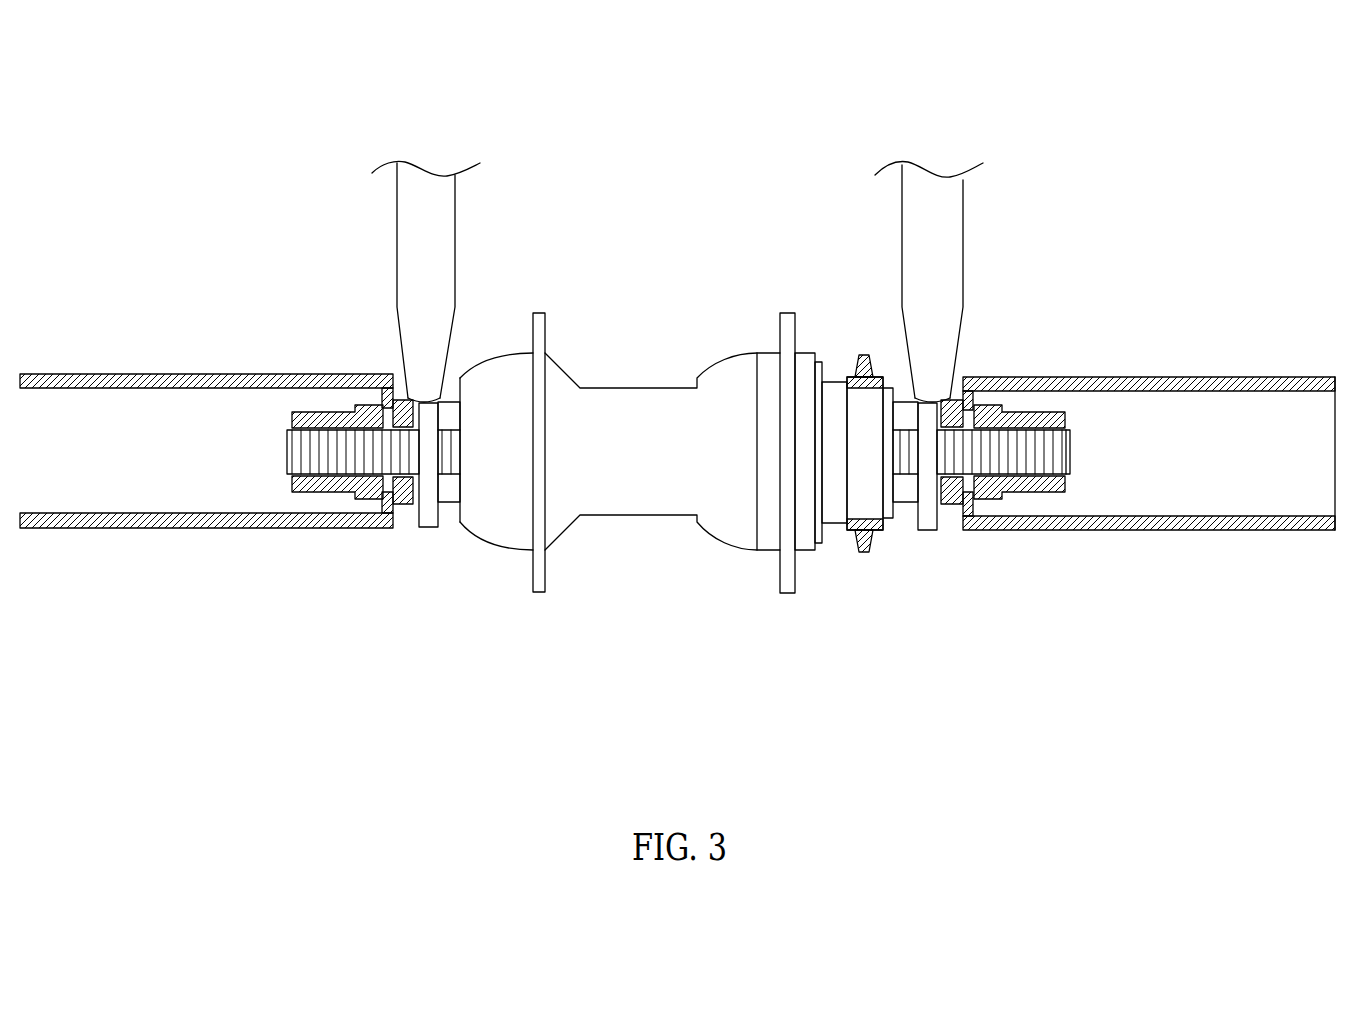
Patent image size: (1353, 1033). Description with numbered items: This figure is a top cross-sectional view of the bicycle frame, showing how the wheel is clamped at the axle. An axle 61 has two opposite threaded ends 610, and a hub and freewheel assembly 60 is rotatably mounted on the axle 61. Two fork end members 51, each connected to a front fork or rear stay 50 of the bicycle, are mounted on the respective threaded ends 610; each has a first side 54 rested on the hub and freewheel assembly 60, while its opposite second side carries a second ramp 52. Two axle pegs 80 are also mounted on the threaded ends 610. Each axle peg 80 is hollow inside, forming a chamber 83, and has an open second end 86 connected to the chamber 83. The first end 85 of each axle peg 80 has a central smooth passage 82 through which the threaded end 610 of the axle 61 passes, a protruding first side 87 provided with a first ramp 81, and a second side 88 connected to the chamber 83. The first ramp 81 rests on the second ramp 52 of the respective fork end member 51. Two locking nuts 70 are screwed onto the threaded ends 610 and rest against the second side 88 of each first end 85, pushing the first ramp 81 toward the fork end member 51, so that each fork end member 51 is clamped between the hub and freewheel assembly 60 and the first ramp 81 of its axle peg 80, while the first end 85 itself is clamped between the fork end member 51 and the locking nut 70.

The front fork or rear stay 50 is at (384, 235).
The fork end member 51 is at (428, 527).
The second ramp 52 is at (640, 481).
The first side 54 is at (888, 522).
The hub and freewheel assembly 60 is at (643, 377).
The axle 61 is at (1085, 436).
The threaded end 610 is at (288, 452).
The locking nut 70 is at (305, 508).
The axle peg 80 is at (130, 545).
The first ramp 81 is at (433, 405).
The smooth passage 82 is at (401, 505).
The chamber 83 is at (1267, 440).
The first end 85 is at (946, 380).
The open second end 86 is at (1290, 530).
The protruding first side 87 is at (402, 398).
The second side 88 is at (363, 527).